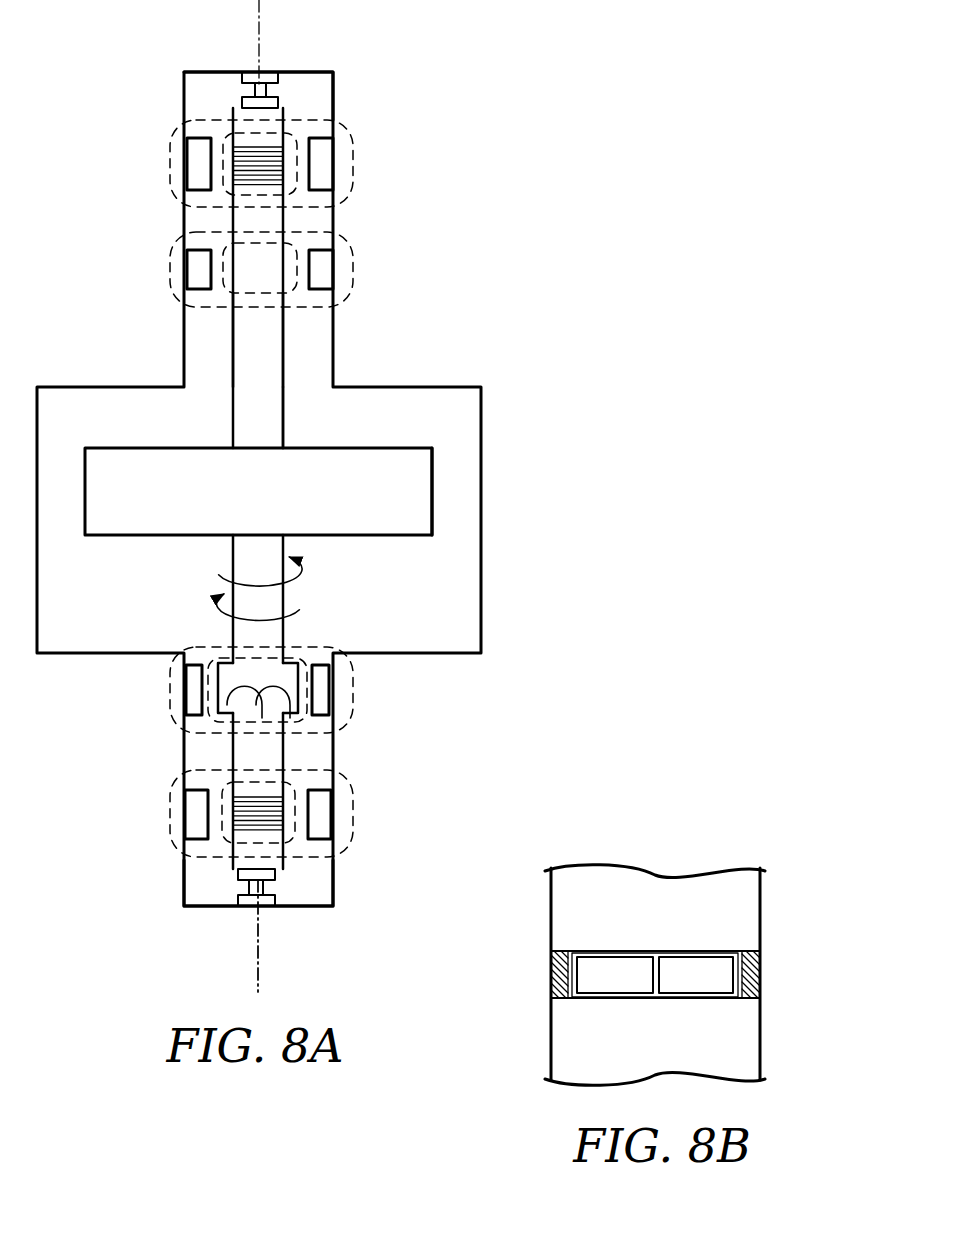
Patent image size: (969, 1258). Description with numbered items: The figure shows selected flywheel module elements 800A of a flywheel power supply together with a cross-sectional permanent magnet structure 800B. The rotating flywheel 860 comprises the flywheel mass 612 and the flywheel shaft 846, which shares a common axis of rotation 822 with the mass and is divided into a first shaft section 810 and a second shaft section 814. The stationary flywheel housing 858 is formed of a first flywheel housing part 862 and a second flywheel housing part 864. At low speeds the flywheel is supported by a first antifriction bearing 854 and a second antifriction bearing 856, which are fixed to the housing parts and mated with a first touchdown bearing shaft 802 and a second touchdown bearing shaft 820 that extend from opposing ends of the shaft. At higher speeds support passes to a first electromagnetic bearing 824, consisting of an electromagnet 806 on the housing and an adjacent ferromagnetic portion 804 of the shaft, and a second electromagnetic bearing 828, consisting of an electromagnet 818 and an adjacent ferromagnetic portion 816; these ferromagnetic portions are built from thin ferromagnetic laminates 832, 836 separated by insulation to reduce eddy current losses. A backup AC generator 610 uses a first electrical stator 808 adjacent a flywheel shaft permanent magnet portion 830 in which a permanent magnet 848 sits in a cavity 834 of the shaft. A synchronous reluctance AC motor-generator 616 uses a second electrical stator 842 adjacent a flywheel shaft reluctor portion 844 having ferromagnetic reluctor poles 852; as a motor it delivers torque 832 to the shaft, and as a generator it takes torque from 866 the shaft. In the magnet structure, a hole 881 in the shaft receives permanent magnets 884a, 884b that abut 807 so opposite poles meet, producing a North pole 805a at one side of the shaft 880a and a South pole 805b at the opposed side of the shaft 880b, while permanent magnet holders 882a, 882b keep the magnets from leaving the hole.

In FIG. 8A, the flywheel module elements 800A is at (471, 168).
In FIG. 8B, the permanent magnet structure 800B is at (721, 826).
In FIG. 8A, the first touchdown bearing shaft 802 is at (268, 95).
In FIG. 8A, the ferromagnetic portion 804 is at (214, 155).
In FIG. 8A, the first electromagnet 806 is at (325, 180).
In FIG. 8A, the first electrical stator 808 is at (325, 275).
In FIG. 8A, the first shaft section 810 is at (240, 350).
In FIG. 8A, the second shaft section 814 is at (264, 610).
In FIG. 8A, the ferromagnetic portion 816 is at (296, 783).
In FIG. 8A, the second electromagnet 818 is at (318, 820).
In FIG. 8A, the second touchdown bearing shaft 820 is at (258, 888).
In FIG. 8A, the axis of rotation 822 is at (260, 940).
In FIG. 8A, the first electromagnetic bearing 824 is at (170, 192).
In FIG. 8A, the second electromagnetic bearing 828 is at (210, 860).
In FIG. 8A, the flywheel shaft permanent magnet portion 830 is at (243, 264).
In FIG. 8A, the thin ferromagnetic laminates 832 is at (290, 160).
In FIG. 8A, the cavity 834 is at (245, 238).
In FIG. 8A, the thin ferromagnetic laminates 836 is at (243, 808).
In FIG. 8A, the second electrical stator 842 is at (326, 692).
In FIG. 8A, the flywheel shaft reluctor portion 844 is at (210, 727).
In FIG. 8A, the flywheel shaft 846 is at (285, 409).
In FIG. 8A, the permanent magnet 848 is at (285, 302).
In FIG. 8A, the ferromagnetic reluctor poles 852 is at (258, 730).
In FIG. 8A, the first antifriction bearing 854 is at (246, 82).
In FIG. 8A, the second antifriction bearing 856 is at (240, 900).
In FIG. 8A, the flywheel housing 858 is at (482, 520).
In FIG. 8A, the flywheel 860 is at (280, 492).
In FIG. 8A, the first flywheel housing part 862 is at (185, 82).
In FIG. 8A, the second flywheel housing part 864 is at (333, 873).
In FIG. 8A, the torque from the shaft 866 is at (220, 585).
In FIG. 8A, the backup AC generator 610 is at (180, 297).
In FIG. 8A, the flywheel mass 612 is at (436, 464).
In FIG. 8A, the synchronous reluctance AC motor-generator 616 is at (350, 725).
In FIG. 8B, the magnet abutment 807 is at (660, 951).
In FIG. 8B, the North pole 805a is at (536, 965).
In FIG. 8B, the South pole 805b is at (775, 965).
In FIG. 8B, the one side of the shaft 880a is at (551, 903).
In FIG. 8B, the opposed side of the shaft 880b is at (760, 903).
In FIG. 8B, the hole 881 is at (697, 998).
In FIG. 8B, the permanent magnet holder 882a is at (565, 998).
In FIG. 8B, the permanent magnet holder 882b is at (745, 998).
In FIG. 8B, the permanent magnet 884a is at (610, 957).
In FIG. 8B, the permanent magnet 884b is at (697, 957).